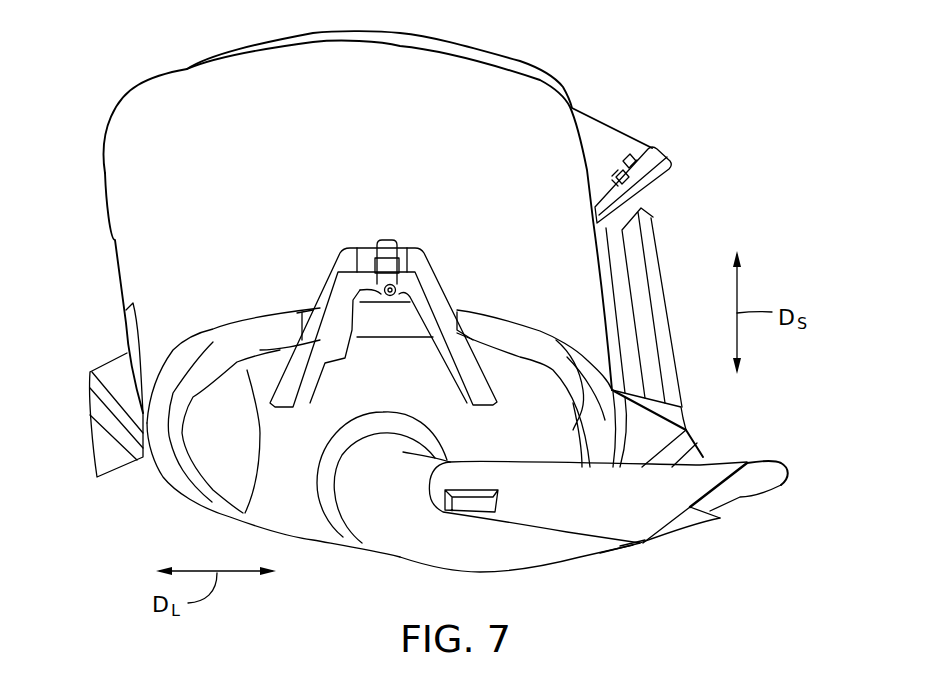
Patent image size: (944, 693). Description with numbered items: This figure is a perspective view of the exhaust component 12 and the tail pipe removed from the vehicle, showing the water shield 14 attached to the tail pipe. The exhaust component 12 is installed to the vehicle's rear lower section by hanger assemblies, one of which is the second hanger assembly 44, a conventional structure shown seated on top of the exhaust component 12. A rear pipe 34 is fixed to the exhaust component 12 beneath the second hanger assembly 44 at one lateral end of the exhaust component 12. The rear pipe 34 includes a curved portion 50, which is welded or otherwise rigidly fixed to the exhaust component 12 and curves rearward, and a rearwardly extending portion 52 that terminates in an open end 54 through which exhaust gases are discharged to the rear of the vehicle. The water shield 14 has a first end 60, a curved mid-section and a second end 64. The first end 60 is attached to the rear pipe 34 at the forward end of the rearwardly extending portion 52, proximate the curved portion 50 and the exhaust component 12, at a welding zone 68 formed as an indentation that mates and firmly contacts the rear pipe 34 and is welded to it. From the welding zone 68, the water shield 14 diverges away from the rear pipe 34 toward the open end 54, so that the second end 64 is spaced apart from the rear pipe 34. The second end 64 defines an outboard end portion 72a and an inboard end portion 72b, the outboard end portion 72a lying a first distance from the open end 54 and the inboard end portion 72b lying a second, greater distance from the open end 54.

The exhaust component 12 is at (152, 183).
The water shield 14 is at (720, 468).
The rear pipe 34 is at (548, 547).
The second hanger assembly 44 is at (427, 240).
The curved portion 50 is at (365, 512).
The rearwardly extending portion 52 is at (480, 543).
The open end 54 is at (688, 537).
The first end 60 is at (481, 457).
The second end 64 is at (777, 460).
The welding zone 68 is at (463, 505).
The outboard end portion 72a is at (630, 540).
The inboard end portion 72b is at (762, 492).